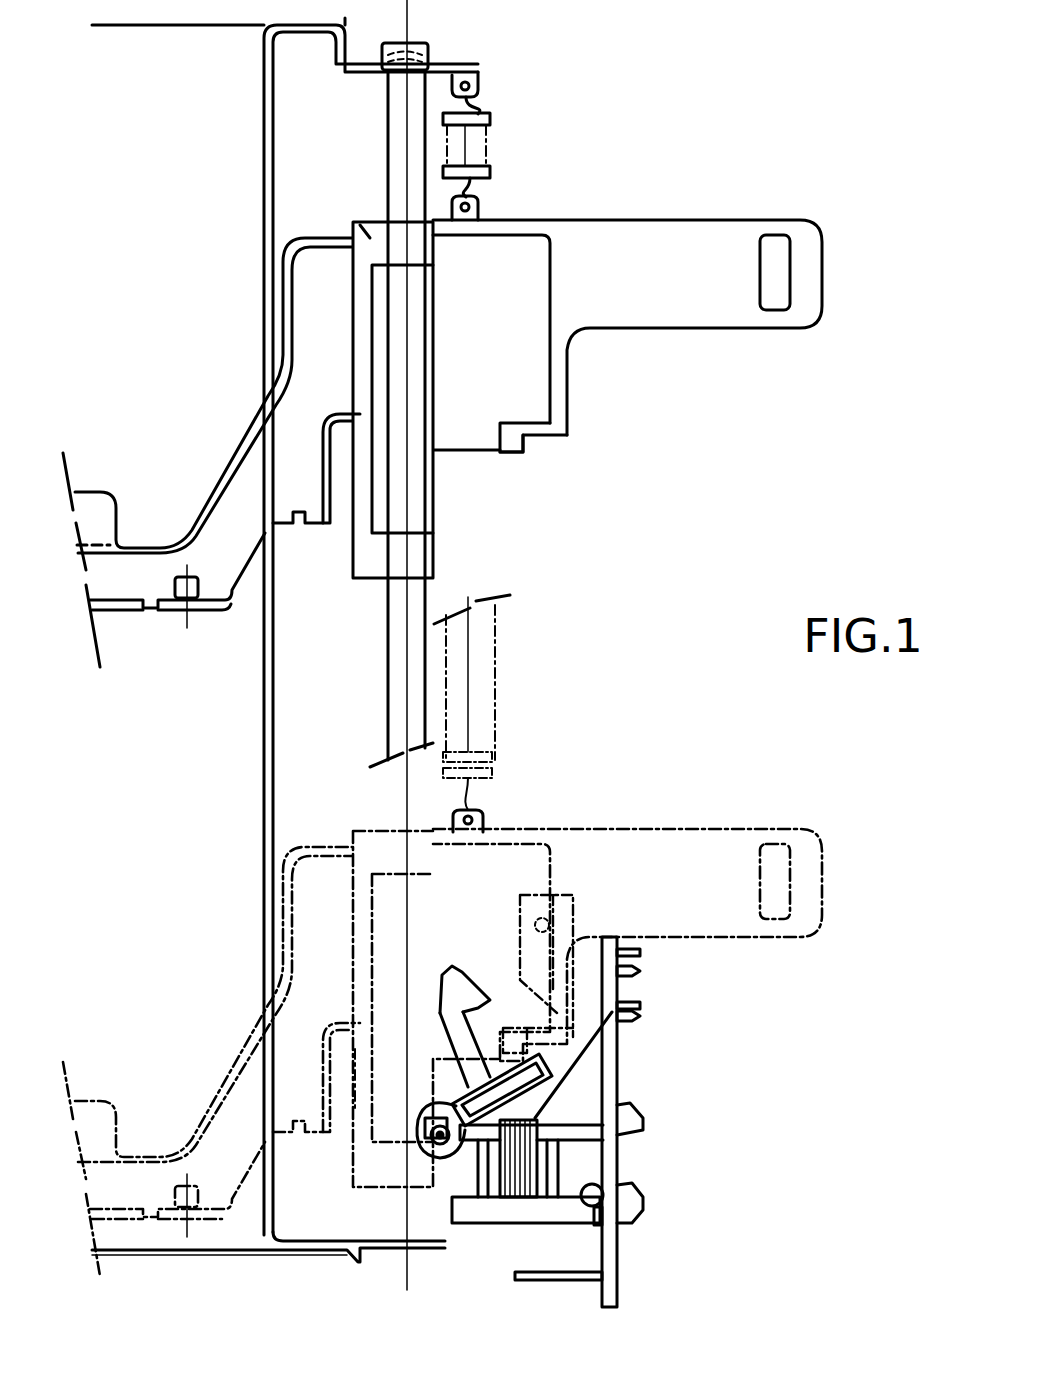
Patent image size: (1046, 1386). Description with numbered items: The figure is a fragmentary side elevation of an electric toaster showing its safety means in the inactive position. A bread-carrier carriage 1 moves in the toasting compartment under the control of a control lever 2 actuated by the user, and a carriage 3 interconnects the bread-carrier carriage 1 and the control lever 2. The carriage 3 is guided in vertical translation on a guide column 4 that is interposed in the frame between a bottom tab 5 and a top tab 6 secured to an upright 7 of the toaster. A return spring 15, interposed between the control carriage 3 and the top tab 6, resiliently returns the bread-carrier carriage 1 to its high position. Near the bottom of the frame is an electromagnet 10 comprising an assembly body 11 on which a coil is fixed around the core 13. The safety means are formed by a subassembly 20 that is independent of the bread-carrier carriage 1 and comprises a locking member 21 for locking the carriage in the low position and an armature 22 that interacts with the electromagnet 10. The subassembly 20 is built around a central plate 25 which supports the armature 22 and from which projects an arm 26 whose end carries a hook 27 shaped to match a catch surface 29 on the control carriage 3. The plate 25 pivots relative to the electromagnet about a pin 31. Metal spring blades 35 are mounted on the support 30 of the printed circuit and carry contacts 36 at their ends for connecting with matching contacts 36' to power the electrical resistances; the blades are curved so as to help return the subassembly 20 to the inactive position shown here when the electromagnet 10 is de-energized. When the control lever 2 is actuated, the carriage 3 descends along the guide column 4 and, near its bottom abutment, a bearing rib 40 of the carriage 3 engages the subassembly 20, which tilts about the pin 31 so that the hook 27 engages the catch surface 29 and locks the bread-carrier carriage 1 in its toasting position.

The bread-carrier carriage 1 is at (128, 492).
The control lever 2 is at (672, 245).
The carriage 3 is at (368, 230).
The guide column 4 is at (418, 608).
The bottom tab 5 is at (393, 1252).
The top tab 6 is at (453, 67).
The upright 7 is at (263, 128).
The electromagnet 10 is at (465, 1233).
The assembly body 11 is at (500, 1212).
The core 13 is at (522, 1207).
The return spring 15 is at (475, 153).
The subassembly 20 is at (417, 993).
The locking member 21 is at (440, 1044).
The armature 22 is at (553, 1082).
The central plate 25 is at (552, 1047).
The arm 26 is at (450, 1013).
The hook 27 is at (467, 987).
The catch surface 29 is at (520, 418).
The support 30 is at (613, 1280).
The pin 31 is at (440, 1168).
The spring blades 35 is at (553, 1180).
The contacts 36 is at (639, 1222).
The matching contacts 36' is at (664, 1156).
The bearing rib 40 is at (510, 455).